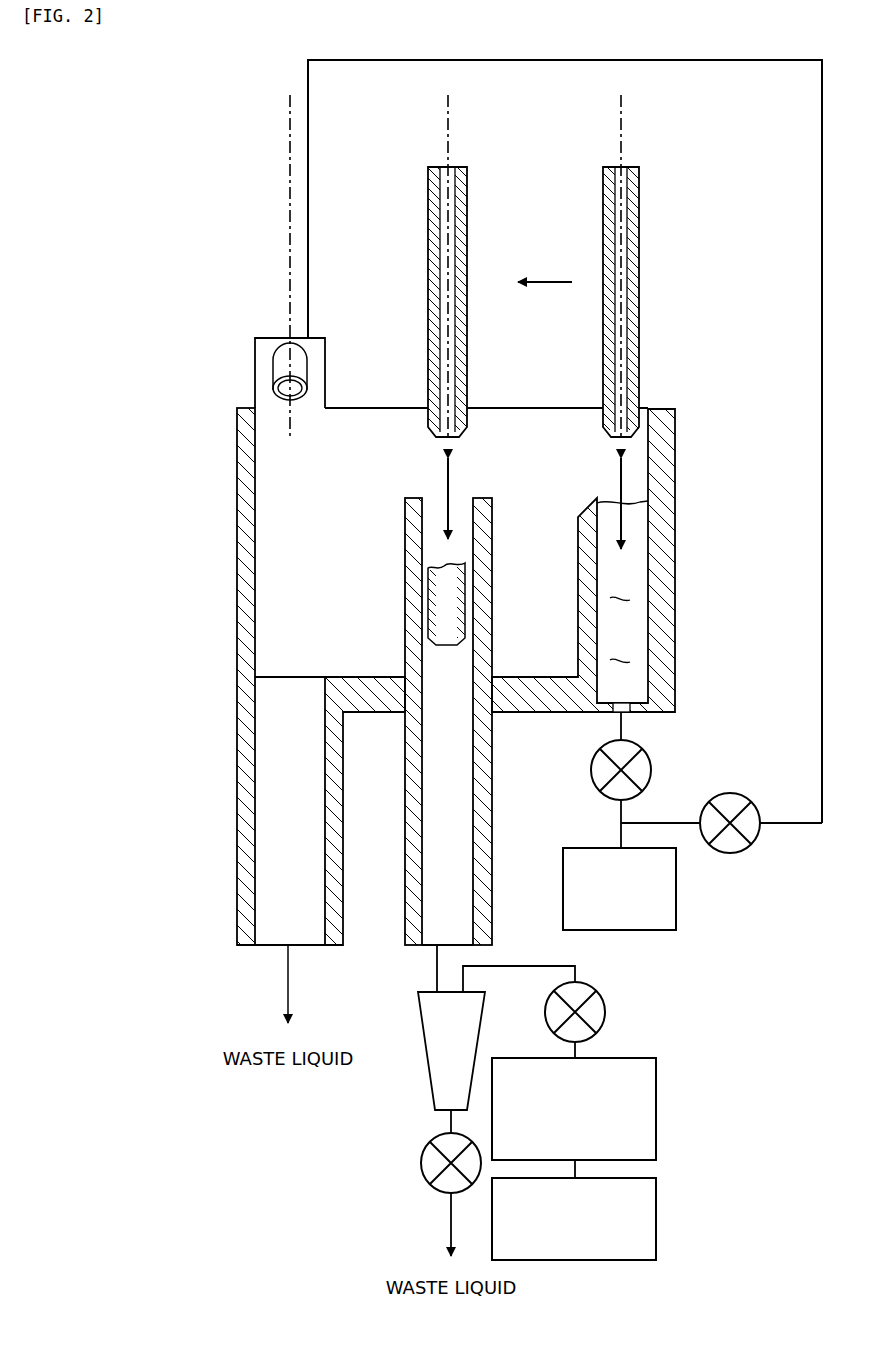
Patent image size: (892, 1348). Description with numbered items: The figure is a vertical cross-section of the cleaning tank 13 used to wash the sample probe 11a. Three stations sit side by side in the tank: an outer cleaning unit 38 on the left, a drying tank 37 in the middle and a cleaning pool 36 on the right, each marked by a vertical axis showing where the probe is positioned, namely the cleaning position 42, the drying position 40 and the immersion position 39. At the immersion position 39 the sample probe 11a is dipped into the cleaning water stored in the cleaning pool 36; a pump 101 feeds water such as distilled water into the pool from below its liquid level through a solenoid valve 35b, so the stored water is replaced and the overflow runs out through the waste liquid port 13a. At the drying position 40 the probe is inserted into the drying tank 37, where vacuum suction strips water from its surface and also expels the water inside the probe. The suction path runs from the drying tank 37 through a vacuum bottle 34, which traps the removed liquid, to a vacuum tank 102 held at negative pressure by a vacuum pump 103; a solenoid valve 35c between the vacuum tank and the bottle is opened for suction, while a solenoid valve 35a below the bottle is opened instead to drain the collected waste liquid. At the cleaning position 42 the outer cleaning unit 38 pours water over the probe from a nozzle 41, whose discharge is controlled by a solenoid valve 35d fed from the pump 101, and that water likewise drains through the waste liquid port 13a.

The sample probe 11a is at (467, 228).
The cleaning tank 13 is at (675, 458).
The waste liquid port 13a is at (268, 813).
The vacuum bottle 34 is at (418, 1060).
The solenoid valve 35a is at (420, 1163).
The solenoid valve 35b is at (651, 768).
The solenoid valve 35c is at (605, 1012).
The solenoid valve 35d is at (752, 845).
The cleaning pool 36 is at (620, 627).
The drying tank 37 is at (453, 792).
The outer cleaning unit 38 is at (268, 503).
The immersion position 39 is at (623, 100).
The drying position 40 is at (450, 100).
The nozzle 41 is at (277, 372).
The cleaning position 42 is at (290, 97).
The pump 101 is at (676, 895).
The vacuum tank 102 is at (656, 1106).
The vacuum pump 103 is at (656, 1217).